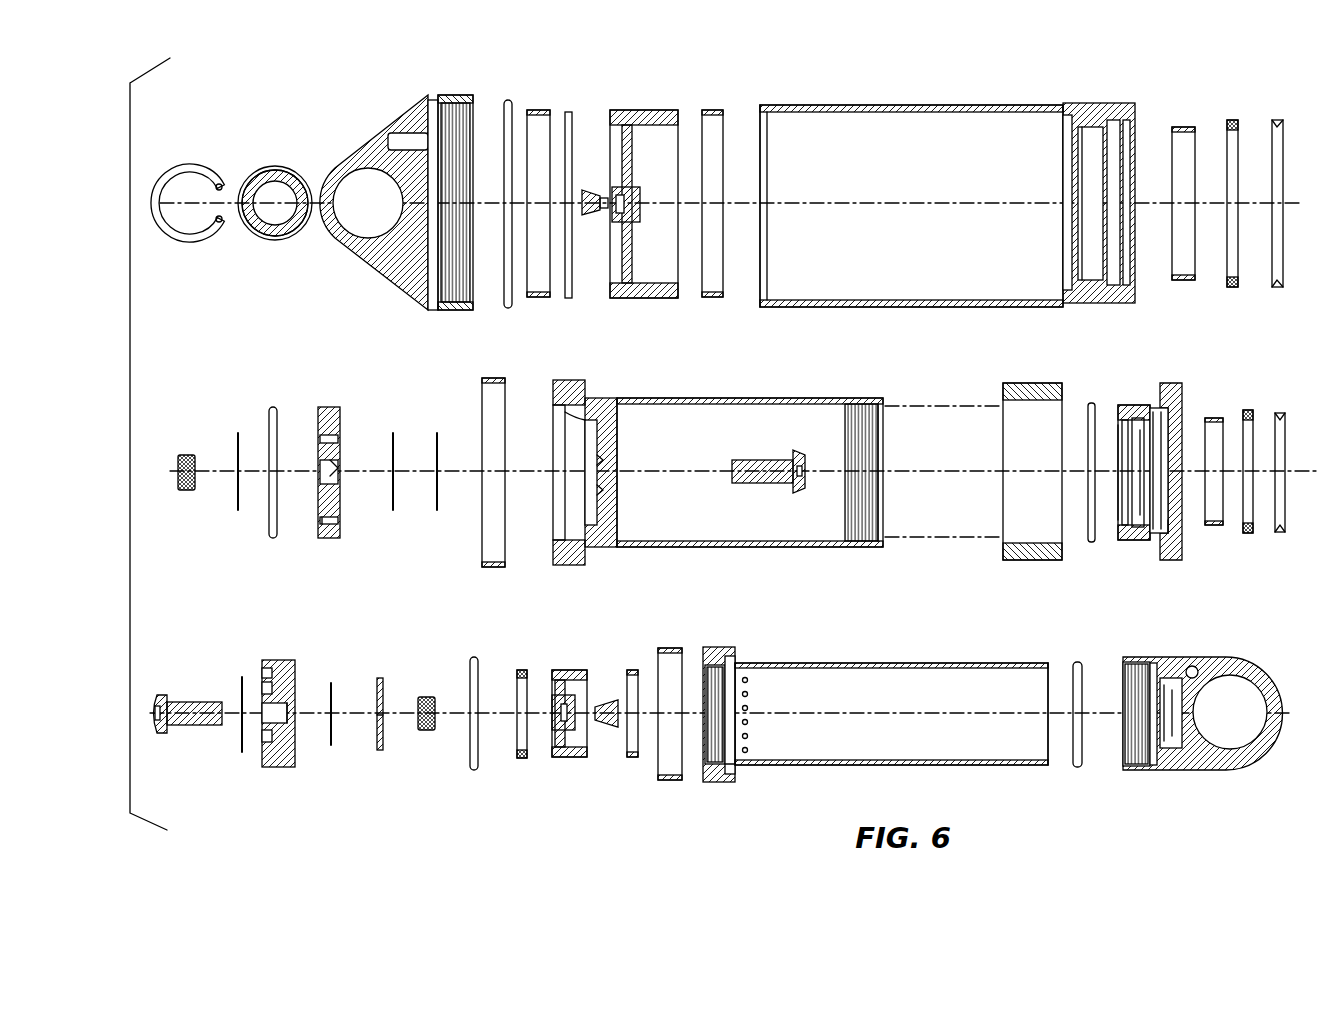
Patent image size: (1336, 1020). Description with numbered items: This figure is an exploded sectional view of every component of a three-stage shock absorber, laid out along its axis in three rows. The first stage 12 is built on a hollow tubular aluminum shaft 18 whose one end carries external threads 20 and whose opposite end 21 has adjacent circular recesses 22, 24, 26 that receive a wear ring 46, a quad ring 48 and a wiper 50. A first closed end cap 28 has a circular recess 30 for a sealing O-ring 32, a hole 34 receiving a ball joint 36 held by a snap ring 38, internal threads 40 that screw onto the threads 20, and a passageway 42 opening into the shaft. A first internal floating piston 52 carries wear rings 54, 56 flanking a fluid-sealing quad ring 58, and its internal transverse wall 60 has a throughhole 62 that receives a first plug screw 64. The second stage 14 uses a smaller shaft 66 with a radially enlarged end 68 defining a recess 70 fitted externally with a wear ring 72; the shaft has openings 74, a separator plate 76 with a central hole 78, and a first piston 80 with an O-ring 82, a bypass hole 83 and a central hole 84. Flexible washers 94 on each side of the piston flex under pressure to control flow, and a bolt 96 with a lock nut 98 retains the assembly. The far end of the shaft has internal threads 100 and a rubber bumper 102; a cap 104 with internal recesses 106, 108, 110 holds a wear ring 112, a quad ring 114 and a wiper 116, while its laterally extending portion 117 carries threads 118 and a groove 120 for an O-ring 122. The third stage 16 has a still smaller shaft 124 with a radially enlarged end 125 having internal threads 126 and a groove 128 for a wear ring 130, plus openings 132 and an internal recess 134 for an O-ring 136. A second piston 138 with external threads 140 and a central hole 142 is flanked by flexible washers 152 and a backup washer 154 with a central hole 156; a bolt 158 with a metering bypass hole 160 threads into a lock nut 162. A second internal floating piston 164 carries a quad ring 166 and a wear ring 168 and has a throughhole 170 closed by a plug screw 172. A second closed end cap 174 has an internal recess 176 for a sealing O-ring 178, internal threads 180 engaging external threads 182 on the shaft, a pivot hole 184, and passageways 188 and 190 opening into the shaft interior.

The first stage 12 is at (884, 66).
The second stage 14 is at (777, 375).
The third stage 16 is at (695, 596).
The shaft 18 is at (950, 105).
The external threads 20 is at (780, 105).
The opposite end 21 is at (1068, 115).
The circular recess 22 is at (1090, 127).
The circular recess 24 is at (1112, 286).
The circular recess 26 is at (1127, 120).
The first closed end cap 28 is at (378, 128).
The circular recess 30 is at (447, 94).
The sealing O-ring 32 is at (508, 100).
The hole 34 is at (362, 230).
The ball joint 36 is at (262, 168).
The snap ring 38 is at (170, 167).
The internal threads 40 is at (470, 280).
The passageway 42 is at (403, 140).
The wear ring 46 is at (1182, 127).
The quad ring 48 is at (1232, 120).
The wiper 50 is at (1277, 120).
The first internal floating piston 52 is at (640, 110).
The wear ring 54 is at (538, 110).
The wear ring 56 is at (712, 110).
The fluid-sealing quad ring 58 is at (569, 112).
The internal transverse wall 60 is at (630, 153).
The throughhole 62 is at (640, 205).
The first plug screw 64 is at (590, 215).
The shaft 66 is at (690, 398).
The radially enlarged end 68 is at (598, 398).
The recess 70 is at (556, 410).
The wear ring 72 is at (490, 378).
The openings 74 is at (585, 420).
The separator plate 76 is at (598, 492).
The central hole 78 is at (598, 460).
The first piston 80 is at (325, 407).
The O-ring 82 is at (272, 407).
The bypass hole 83 is at (320, 520).
The central hole 84 is at (338, 462).
The flexible washers 94 is at (236, 502).
The bolt 96 is at (770, 460).
The lock nut 98 is at (183, 455).
The internal threads 100 is at (875, 415).
The rubber bumper 102 is at (1010, 383).
The cap 104 is at (1188, 548).
The internal recess 106 is at (1125, 540).
The internal recess 108 is at (1130, 405).
The internal recess 110 is at (1176, 420).
The wear ring 112 is at (1215, 418).
The quad ring 114 is at (1250, 410).
The wiper 116 is at (1280, 530).
The laterally extending portion 117 is at (1140, 541).
The threads 118 is at (1155, 408).
The groove 120 is at (1168, 548).
The O-ring 122 is at (1090, 403).
The shaft 124 is at (860, 663).
The radially enlarged end 125 is at (740, 660).
The threads 126 is at (712, 762).
The groove 128 is at (718, 647).
The wear ring 130 is at (668, 648).
The openings 132 is at (752, 707).
The internal recess 134 is at (733, 766).
The O-ring 136 is at (472, 657).
The second piston 138 is at (288, 670).
The external threads 140 is at (270, 666).
The central hole 142 is at (292, 703).
The flexible washers 152 is at (242, 754).
The backup washer 154 is at (380, 678).
The central hole 156 is at (383, 722).
The bolt 158 is at (195, 702).
The bypass hole 160 is at (157, 726).
The lock nut 162 is at (428, 732).
The second internal floating piston 164 is at (570, 670).
The quad ring 166 is at (522, 670).
The wear ring 168 is at (632, 670).
The throughhole 170 is at (560, 716).
The plug screw 172 is at (604, 727).
The second closed end cap 174 is at (1218, 656).
The internal recess 176 is at (1153, 766).
The sealing O-ring 178 is at (1077, 662).
The internal threads 180 is at (1130, 680).
The external threads 182 is at (1030, 663).
The hole 184 is at (1252, 690).
The passageway 188 is at (1188, 667).
The passageway 190 is at (1175, 746).